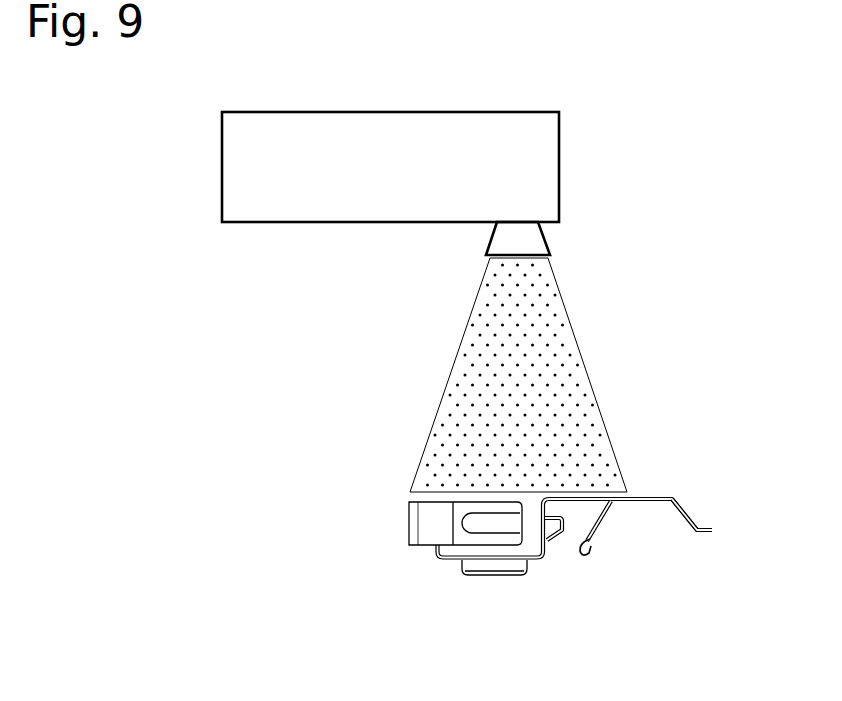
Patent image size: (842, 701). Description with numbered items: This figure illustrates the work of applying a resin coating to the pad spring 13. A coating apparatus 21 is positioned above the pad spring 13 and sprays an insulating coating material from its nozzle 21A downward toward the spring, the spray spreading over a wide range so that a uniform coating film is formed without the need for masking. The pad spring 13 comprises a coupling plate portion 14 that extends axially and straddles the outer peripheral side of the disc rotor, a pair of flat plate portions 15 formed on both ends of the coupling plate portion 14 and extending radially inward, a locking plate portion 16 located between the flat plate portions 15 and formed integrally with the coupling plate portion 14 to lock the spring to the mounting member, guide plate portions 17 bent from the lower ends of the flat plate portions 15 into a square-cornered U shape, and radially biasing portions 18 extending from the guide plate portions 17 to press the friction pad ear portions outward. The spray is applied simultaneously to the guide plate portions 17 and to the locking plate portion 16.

The coating apparatus 21 is at (347, 117).
The nozzle 21A is at (538, 240).
The pad spring 13 is at (650, 491).
The coupling plate portion 14 is at (688, 512).
The flat plate portion 15 is at (580, 502).
The locking plate portion 16 is at (603, 522).
The guide plate portion 17 is at (453, 562).
The radially biasing portion 18 is at (462, 527).